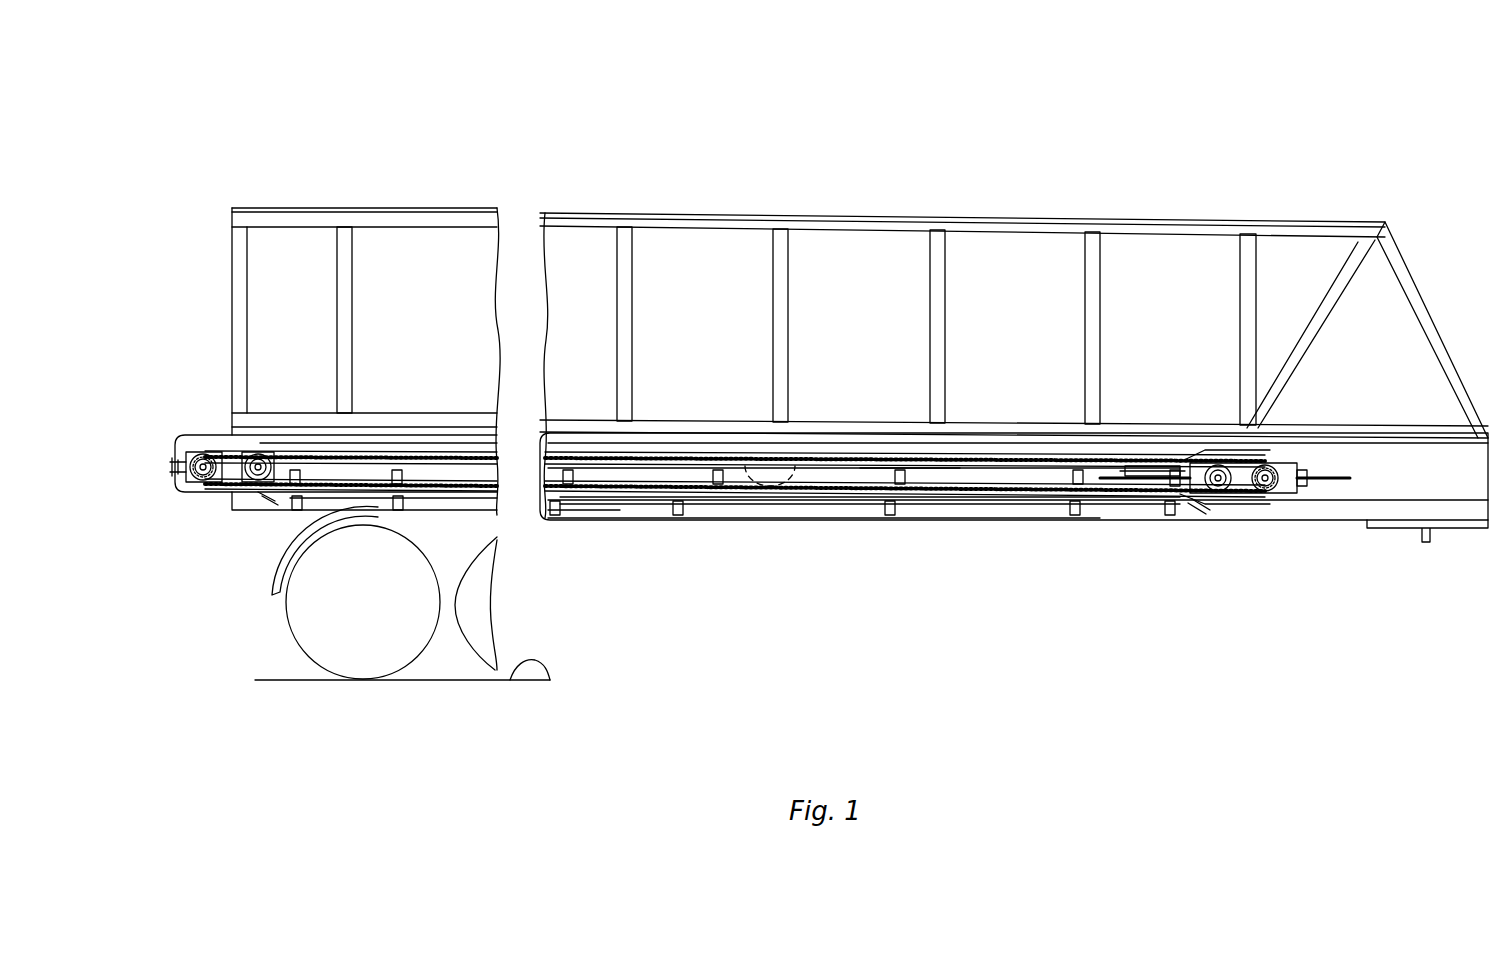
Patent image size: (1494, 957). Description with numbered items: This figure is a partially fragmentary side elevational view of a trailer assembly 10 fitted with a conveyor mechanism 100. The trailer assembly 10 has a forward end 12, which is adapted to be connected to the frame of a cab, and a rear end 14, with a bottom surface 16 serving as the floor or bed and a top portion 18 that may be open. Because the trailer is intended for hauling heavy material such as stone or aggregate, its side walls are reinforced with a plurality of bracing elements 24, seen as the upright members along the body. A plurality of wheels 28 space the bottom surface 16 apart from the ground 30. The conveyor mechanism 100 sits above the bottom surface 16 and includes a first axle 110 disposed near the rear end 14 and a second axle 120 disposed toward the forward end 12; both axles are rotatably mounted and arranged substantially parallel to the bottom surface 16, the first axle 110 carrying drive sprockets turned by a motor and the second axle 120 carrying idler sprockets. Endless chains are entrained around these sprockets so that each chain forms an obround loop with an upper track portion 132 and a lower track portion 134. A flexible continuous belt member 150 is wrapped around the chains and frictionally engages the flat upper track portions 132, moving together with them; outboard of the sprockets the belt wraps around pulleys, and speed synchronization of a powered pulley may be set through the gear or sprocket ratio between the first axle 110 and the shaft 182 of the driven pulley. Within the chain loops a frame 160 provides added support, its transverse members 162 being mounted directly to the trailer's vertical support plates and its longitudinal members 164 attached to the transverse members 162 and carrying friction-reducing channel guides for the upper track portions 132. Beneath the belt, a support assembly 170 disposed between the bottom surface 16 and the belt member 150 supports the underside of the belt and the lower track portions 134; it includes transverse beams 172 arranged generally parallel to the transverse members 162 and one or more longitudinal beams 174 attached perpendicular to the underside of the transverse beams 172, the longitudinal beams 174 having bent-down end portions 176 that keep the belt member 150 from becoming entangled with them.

The trailer assembly 10 is at (1266, 128).
The forward end 12 is at (1432, 305).
The rear end 14 is at (232, 305).
The bottom surface 16 is at (726, 520).
The top portion 18 is at (768, 216).
The bracing elements 24 is at (343, 248).
The wheels 28 is at (388, 660).
The ground 30 is at (540, 662).
The conveyor mechanism 100 is at (1264, 510).
The first axle 110 is at (262, 483).
The second axle 120 is at (1225, 493).
The upper track portion 132 is at (905, 498).
The lower track portion 134 is at (997, 503).
The belt member 150 is at (225, 450).
The frame 160 is at (838, 480).
The transverse members 162 is at (880, 470).
The longitudinal members 164 is at (785, 447).
The support assembly 170 is at (612, 522).
The transverse beams 172 is at (672, 508).
The longitudinal beams 174 is at (580, 506).
The bent-down end portions 176 is at (272, 505).
The shaft 182 is at (205, 482).